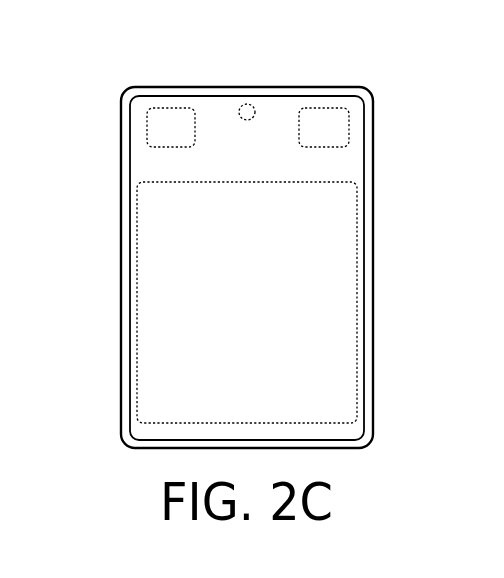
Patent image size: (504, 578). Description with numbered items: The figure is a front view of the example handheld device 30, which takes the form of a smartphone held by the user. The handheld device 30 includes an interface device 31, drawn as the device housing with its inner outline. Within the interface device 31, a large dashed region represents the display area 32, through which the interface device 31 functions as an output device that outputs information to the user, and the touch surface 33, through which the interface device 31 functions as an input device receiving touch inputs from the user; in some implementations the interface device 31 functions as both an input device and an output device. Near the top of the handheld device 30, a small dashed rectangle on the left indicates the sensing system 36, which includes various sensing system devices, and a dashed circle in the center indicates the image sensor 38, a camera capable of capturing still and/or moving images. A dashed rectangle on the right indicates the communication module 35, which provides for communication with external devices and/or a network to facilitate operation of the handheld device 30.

The handheld device 30 is at (127, 70).
The interface device 31 is at (120, 302).
The display area 32 is at (170, 282).
The touch surface 33 is at (153, 175).
The communication module 35 is at (323, 130).
The sensing system 36 is at (147, 118).
The image sensor 38 is at (240, 104).